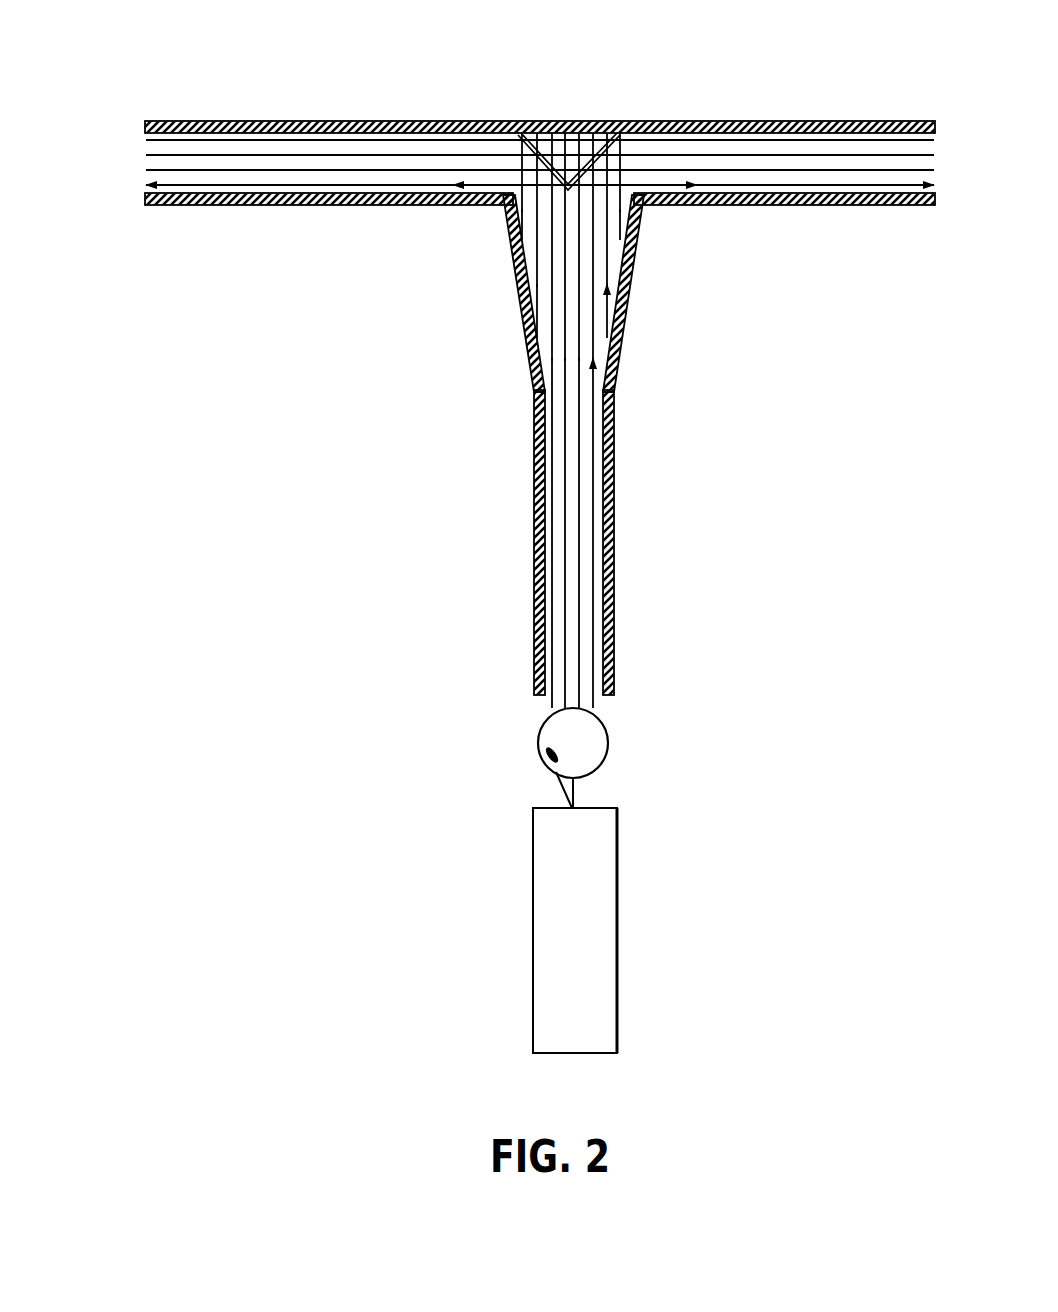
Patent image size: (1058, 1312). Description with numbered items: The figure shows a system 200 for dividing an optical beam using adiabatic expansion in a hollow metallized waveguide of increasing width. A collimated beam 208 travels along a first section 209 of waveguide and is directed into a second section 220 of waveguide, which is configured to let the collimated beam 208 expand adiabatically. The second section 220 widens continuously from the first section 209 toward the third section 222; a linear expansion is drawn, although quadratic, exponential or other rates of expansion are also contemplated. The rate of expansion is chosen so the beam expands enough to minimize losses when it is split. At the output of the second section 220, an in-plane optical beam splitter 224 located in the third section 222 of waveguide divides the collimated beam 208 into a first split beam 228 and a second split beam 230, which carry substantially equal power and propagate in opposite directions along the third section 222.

The system 200 is at (178, 102).
The third section 222 is at (364, 108).
The in-plane optical beam splitter 224 is at (590, 121).
The second section 220 is at (503, 292).
The first split beam 228 is at (335, 142).
The second split beam 230 is at (820, 142).
The collimated beam 208 is at (593, 550).
The first section 209 is at (516, 665).